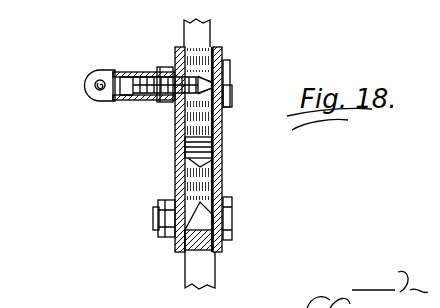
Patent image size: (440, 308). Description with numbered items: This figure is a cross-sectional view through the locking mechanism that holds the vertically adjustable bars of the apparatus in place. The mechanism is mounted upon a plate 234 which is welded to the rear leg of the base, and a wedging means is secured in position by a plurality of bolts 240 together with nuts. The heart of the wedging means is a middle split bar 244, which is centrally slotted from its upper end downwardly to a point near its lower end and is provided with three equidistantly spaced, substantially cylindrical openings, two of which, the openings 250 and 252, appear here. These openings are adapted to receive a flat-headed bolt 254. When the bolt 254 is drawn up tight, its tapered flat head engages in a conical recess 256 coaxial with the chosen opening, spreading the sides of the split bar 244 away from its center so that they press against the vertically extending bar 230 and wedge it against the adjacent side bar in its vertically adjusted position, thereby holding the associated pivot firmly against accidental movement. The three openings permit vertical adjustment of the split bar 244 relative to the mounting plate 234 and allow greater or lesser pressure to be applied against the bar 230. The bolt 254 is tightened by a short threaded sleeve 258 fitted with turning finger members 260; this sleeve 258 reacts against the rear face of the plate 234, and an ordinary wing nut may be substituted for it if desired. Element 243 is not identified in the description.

The vertically extending bar 230 is at (204, 273).
The plate 234 is at (181, 46).
The bolt 240 is at (228, 64).
The washer collar 243 is at (163, 67).
The middle split bar 244 is at (183, 117).
The cylindrical opening 250 is at (195, 155).
The cylindrical opening 252 is at (178, 222).
The flat-headed bolt 254 is at (213, 78).
The conical recess 256 is at (228, 96).
The threaded sleeve 258 is at (118, 72).
The turning finger member 260 is at (93, 85).